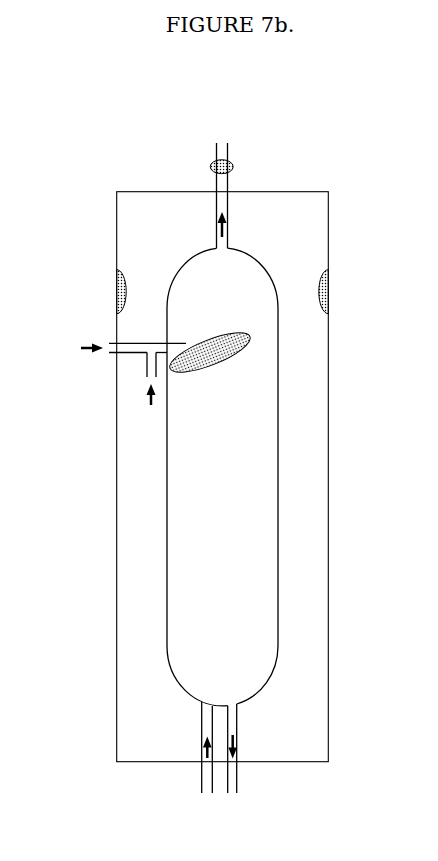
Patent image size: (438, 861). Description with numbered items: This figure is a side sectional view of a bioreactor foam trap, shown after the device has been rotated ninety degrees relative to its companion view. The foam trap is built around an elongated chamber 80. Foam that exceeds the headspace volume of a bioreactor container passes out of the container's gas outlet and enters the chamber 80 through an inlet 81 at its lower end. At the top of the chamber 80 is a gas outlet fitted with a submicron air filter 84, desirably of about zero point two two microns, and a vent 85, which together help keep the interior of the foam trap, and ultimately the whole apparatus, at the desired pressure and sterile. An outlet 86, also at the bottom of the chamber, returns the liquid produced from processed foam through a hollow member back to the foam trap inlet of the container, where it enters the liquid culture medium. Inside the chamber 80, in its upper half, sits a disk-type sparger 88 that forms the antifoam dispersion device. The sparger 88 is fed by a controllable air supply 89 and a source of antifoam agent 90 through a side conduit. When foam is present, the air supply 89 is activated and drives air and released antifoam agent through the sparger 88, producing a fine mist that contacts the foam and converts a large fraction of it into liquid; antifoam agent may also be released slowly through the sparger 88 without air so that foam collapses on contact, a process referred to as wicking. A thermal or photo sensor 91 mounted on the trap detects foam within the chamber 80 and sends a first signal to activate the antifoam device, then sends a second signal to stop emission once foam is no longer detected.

The chamber 80 is at (278, 518).
The inlet 81 is at (202, 702).
The submicron air filter 84 is at (227, 168).
The vent 85 is at (220, 152).
The outlet 86 is at (237, 705).
The disk-type sparger 88 is at (232, 343).
The controllable air supply 89 is at (123, 345).
The source of antifoam agent 90 is at (152, 378).
The thermal or photo sensor 91 is at (328, 292).